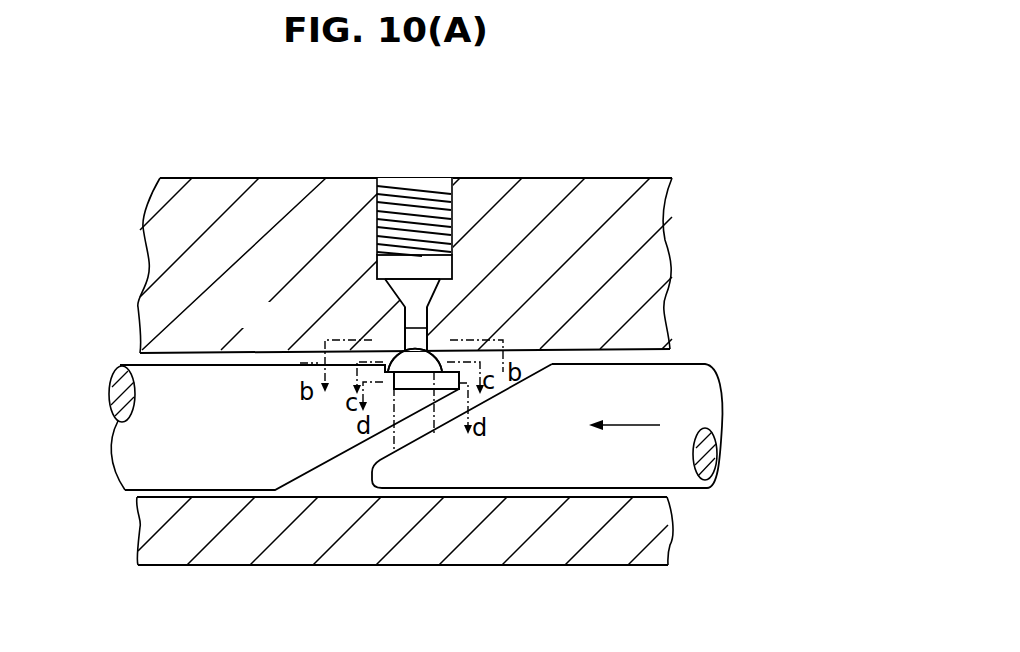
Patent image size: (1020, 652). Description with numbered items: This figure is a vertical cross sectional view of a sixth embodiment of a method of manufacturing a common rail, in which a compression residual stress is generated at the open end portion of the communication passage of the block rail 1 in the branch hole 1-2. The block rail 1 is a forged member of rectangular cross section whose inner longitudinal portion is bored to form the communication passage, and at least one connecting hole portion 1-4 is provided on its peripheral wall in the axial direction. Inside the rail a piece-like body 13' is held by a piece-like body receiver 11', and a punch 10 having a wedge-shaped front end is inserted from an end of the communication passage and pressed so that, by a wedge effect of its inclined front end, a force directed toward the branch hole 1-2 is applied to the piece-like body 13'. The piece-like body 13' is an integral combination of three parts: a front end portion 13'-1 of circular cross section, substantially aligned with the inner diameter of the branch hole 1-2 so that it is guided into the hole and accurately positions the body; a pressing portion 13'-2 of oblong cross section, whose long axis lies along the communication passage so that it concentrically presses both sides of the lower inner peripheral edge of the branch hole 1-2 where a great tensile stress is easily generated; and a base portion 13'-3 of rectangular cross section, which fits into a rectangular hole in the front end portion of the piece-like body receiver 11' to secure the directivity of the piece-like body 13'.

The block rail 1 is at (662, 305).
The branch hole 1-2 is at (450, 330).
The connecting hole portion 1-4 is at (437, 197).
The piece-like body 13' is at (536, 243).
The front end portion 13'-1 is at (367, 231).
The pressing portion 13'-2 is at (340, 336).
The base portion 13'-3 is at (408, 495).
The punch 10 is at (660, 465).
The piece-like body receiver 11' is at (99, 433).